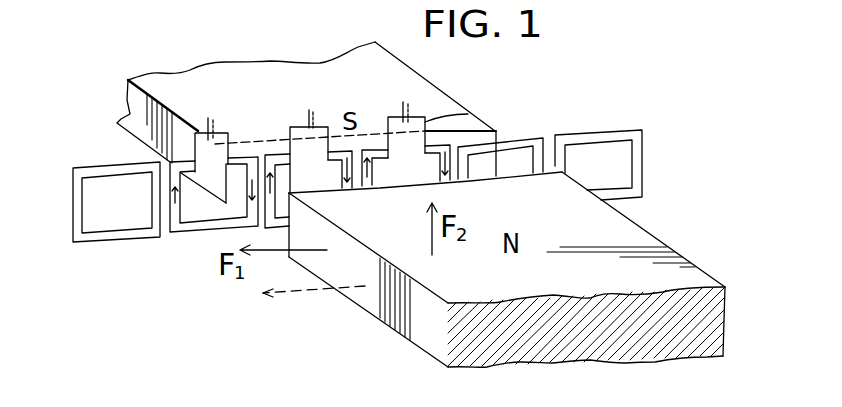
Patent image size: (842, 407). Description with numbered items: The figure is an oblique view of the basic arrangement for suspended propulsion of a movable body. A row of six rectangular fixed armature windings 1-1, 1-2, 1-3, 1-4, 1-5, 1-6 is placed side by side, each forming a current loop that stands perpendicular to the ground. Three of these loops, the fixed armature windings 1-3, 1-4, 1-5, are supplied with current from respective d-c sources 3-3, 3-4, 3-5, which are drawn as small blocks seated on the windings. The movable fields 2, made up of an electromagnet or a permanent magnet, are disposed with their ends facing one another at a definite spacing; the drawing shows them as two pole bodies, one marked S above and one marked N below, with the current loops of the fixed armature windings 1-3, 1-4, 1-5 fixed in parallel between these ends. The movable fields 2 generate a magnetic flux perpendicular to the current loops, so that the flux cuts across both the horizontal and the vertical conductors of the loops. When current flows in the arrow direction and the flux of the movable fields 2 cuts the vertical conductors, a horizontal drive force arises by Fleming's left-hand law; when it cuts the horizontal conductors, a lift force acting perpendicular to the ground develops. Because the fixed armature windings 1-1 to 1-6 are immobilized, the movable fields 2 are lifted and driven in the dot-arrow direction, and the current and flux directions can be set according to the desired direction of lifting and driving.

The movable fields 2 is at (168, 90).
The fixed armature winding 1-1 is at (613, 130).
The fixed armature winding 1-2 is at (521, 138).
The fixed armature winding 1-3 is at (452, 143).
The fixed armature winding 1-4 is at (333, 163).
The fixed armature winding 1-5 is at (250, 155).
The fixed armature winding 1-6 is at (127, 160).
The d-c source 3-3 is at (402, 108).
The d-c source 3-4 is at (309, 117).
The d-c source 3-5 is at (213, 109).